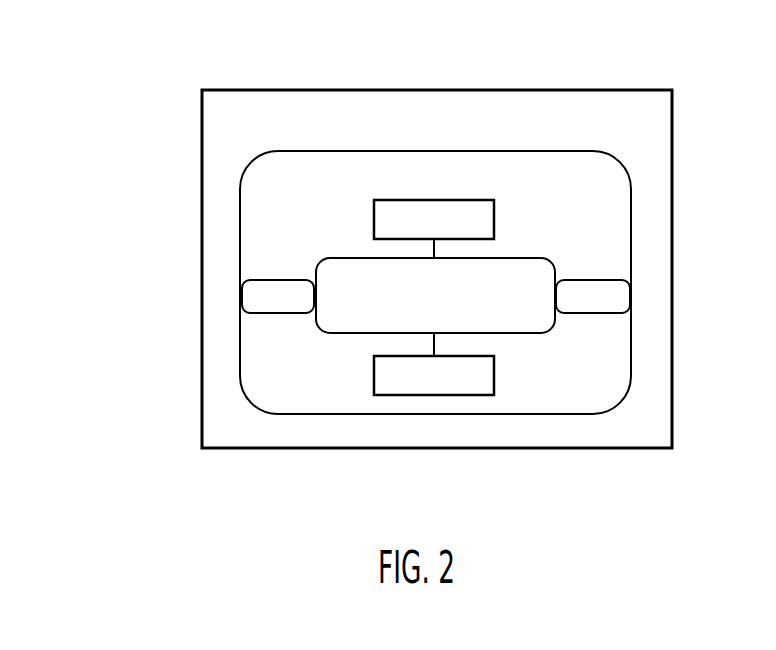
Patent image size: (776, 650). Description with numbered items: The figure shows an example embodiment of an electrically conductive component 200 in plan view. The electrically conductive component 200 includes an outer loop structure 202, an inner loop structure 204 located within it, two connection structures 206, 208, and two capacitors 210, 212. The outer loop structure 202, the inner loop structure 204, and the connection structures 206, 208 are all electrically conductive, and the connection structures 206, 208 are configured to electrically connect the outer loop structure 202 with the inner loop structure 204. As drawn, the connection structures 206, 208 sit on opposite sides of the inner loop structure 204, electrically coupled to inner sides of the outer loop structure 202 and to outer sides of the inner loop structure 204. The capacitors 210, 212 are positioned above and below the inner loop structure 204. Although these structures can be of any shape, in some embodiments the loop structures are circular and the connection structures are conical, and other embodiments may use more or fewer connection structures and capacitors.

The electrically conductive component 200 is at (633, 90).
The outer loop structure 202 is at (632, 357).
The inner loop structure 204 is at (536, 334).
The connection structure 206 is at (252, 302).
The connection structure 208 is at (622, 298).
The capacitor 210 is at (373, 223).
The capacitor 212 is at (373, 384).